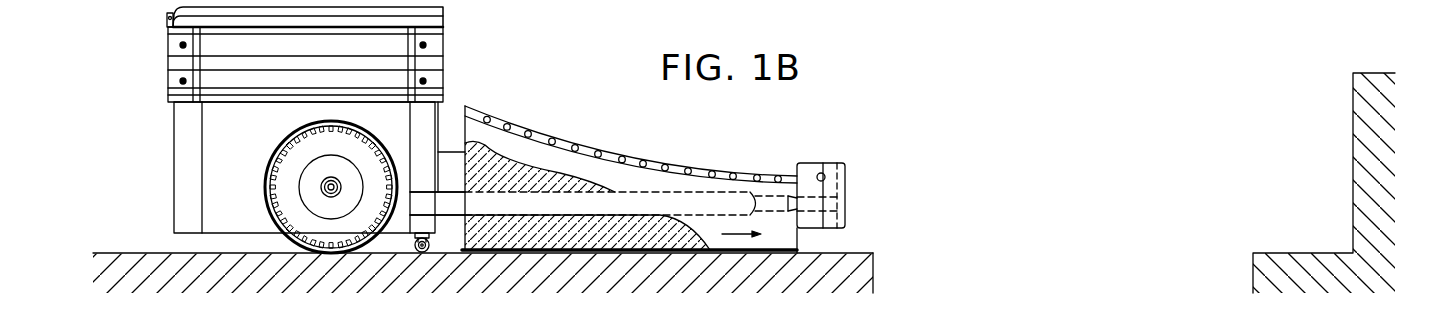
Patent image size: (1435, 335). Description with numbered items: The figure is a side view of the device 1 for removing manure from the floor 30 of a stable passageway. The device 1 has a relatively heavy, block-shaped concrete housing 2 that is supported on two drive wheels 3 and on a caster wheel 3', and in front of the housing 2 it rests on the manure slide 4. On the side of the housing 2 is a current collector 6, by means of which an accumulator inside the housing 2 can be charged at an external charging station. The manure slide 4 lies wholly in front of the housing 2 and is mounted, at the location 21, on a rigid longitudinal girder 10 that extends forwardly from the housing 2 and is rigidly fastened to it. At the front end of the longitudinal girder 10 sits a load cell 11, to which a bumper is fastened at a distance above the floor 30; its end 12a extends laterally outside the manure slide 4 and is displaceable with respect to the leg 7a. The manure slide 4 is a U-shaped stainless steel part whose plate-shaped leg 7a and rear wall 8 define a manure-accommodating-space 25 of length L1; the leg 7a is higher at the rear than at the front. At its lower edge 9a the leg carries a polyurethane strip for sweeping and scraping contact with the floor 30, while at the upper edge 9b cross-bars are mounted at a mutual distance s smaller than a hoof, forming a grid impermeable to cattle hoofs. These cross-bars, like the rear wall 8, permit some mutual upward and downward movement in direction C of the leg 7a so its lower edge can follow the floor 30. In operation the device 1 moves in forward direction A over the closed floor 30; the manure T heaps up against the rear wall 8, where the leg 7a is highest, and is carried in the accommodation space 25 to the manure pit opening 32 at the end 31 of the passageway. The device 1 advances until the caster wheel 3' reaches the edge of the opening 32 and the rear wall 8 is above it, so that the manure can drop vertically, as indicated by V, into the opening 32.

The device 1 is at (152, 89).
The housing 2 is at (243, 200).
The drive wheels 3 is at (262, 187).
The caster wheel 3' is at (367, 284).
The manure slide 4 is at (498, 168).
The current collectors 6 is at (226, 43).
The leg 7a is at (631, 123).
The rear wall 8 is at (473, 132).
The lower edge 9a is at (471, 251).
The upper edges 9b is at (466, 106).
The longitudinal girder 10 is at (445, 202).
The load cell 11 is at (775, 206).
The bumper end 12a is at (807, 191).
The mounting location 21 is at (464, 191).
The manure-accommodating-space 25 is at (565, 180).
The floor 30 is at (856, 253).
The end of the passageway 31 is at (1362, 175).
The manure pit opening 32 is at (1138, 252).
The manure T is at (533, 150).
The mutual distance s is at (647, 110).
The forward direction A is at (988, 103).
The upward/downward movement direction C is at (860, 183).
The vertical direction V is at (950, 252).
The length L1 is at (1262, 196).